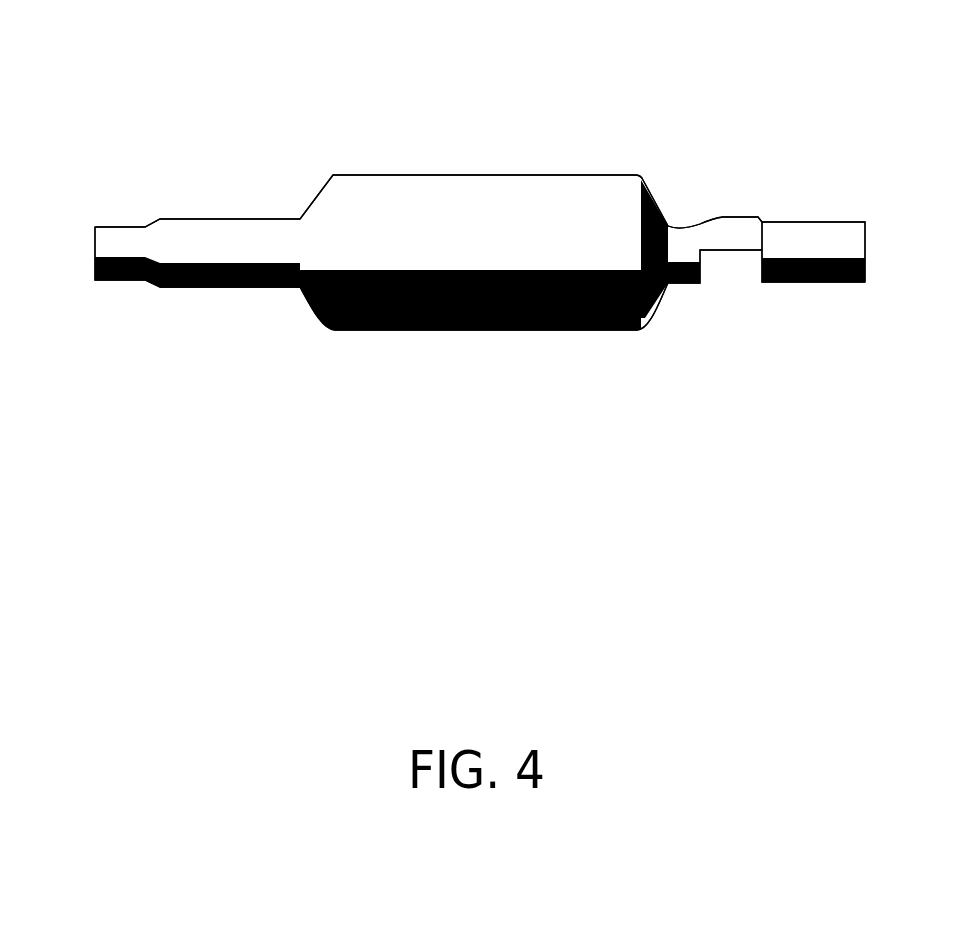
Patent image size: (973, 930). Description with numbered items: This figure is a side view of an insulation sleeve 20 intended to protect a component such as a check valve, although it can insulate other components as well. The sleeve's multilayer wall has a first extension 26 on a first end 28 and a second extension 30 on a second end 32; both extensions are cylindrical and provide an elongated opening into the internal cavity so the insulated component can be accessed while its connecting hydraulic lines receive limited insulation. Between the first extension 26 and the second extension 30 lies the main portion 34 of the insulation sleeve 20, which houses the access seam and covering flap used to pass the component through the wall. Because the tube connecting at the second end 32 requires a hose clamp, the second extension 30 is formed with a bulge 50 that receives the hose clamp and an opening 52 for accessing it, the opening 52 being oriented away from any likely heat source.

The insulation sleeve 20 is at (716, 144).
The first extension 26 is at (188, 228).
The first end 28 is at (219, 318).
The second extension 30 is at (808, 281).
The second end 32 is at (804, 194).
The main portion 34 is at (517, 155).
The bulge 50 is at (725, 224).
The opening 52 is at (727, 275).